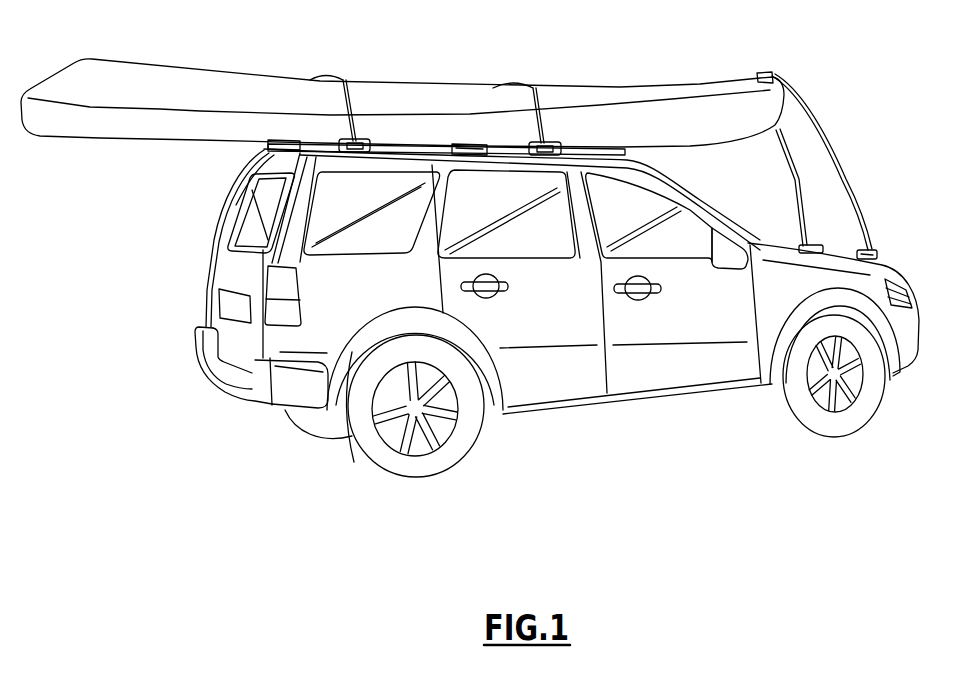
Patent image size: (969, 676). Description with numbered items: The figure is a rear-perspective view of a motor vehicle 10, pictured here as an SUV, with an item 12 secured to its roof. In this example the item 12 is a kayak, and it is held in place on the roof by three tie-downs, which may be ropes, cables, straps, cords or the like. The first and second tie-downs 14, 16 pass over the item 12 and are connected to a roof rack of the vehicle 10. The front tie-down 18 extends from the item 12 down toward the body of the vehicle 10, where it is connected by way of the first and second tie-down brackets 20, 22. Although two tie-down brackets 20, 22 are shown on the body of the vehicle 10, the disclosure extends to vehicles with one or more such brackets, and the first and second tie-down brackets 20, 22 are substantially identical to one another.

The motor vehicle 10 is at (222, 566).
The item 12 is at (455, 103).
The first tie-down 14 is at (358, 98).
The second tie-down 16 is at (542, 97).
The front tie-down 18 is at (845, 178).
The first tie-down bracket 20 is at (794, 240).
The second tie-down bracket 22 is at (882, 252).